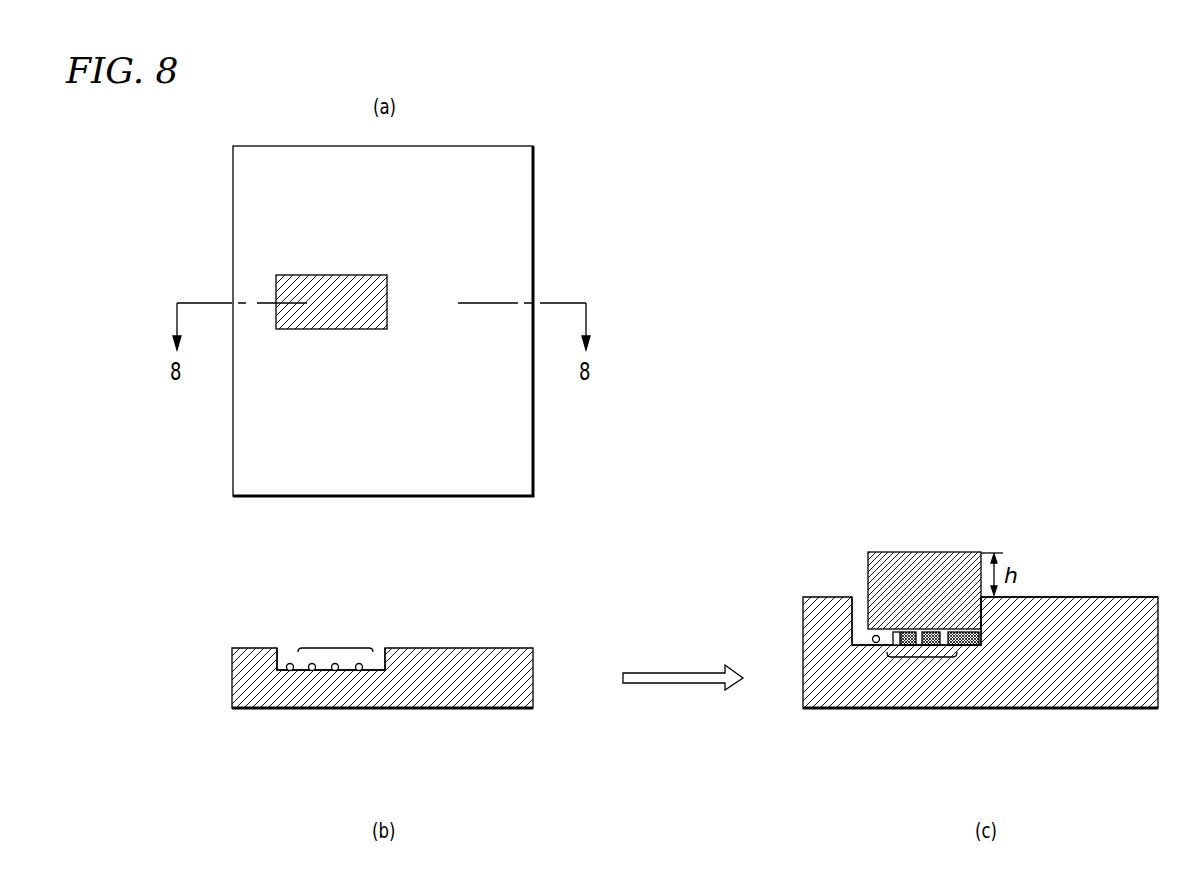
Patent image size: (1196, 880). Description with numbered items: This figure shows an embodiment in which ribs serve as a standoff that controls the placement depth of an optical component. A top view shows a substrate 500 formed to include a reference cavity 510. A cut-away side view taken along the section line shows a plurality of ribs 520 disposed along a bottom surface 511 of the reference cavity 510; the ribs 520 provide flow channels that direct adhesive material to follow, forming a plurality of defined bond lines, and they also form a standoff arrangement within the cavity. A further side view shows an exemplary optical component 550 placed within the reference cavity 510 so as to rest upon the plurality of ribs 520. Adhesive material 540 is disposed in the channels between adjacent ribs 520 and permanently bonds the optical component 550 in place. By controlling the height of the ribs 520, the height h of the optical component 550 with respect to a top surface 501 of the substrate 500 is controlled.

The substrate 500 is at (518, 184).
The top surface 501 is at (1076, 597).
The reference cavity 510 is at (335, 283).
The bottom surface 511 is at (296, 671).
The plurality of ribs 520 is at (340, 646).
The adhesive material 540 is at (966, 646).
The optical component 550 is at (915, 560).